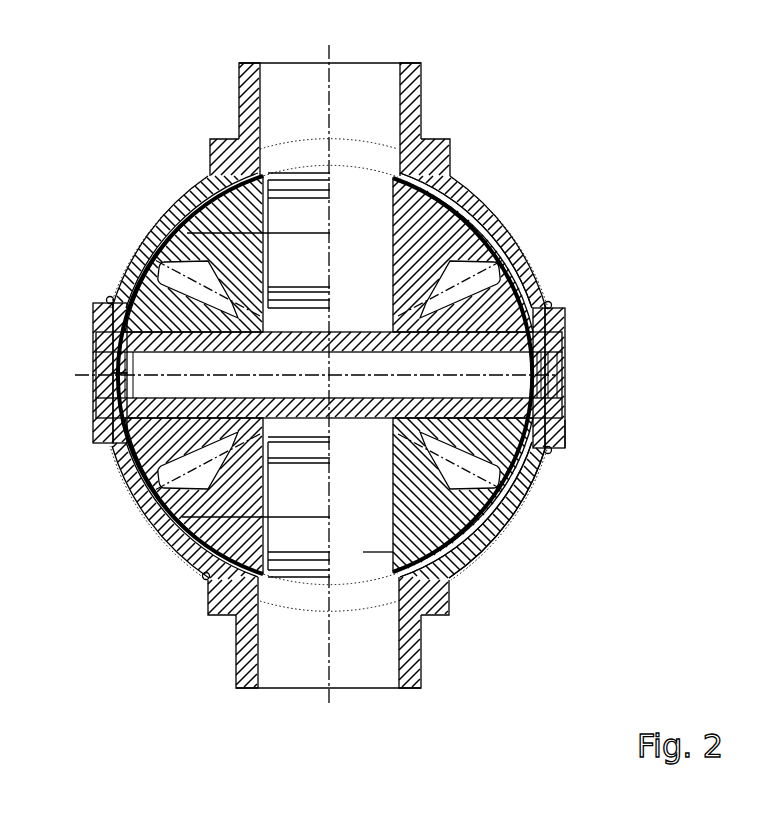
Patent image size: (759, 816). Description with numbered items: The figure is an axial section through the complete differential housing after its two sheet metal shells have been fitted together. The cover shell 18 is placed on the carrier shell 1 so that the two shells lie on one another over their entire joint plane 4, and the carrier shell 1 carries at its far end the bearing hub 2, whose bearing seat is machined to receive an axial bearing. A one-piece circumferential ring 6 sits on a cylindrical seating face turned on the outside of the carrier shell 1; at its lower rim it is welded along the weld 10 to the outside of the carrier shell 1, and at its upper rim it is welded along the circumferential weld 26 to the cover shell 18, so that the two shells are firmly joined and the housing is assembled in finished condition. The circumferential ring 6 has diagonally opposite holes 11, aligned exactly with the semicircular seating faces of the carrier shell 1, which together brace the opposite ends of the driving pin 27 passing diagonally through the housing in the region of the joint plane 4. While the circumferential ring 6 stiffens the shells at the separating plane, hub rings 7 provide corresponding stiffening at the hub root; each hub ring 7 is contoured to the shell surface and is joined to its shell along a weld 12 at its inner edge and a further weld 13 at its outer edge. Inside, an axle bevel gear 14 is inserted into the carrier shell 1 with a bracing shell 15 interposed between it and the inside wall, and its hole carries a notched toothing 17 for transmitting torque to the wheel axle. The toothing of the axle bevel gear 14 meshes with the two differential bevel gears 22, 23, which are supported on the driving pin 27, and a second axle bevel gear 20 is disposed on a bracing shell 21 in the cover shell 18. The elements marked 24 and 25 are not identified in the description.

The carrier shell 1 is at (444, 560).
The bearing hub 2 is at (248, 95).
The joint plane 4 is at (573, 378).
The circumferential ring 6 is at (557, 325).
The hub ring 7 is at (440, 150).
The weld 10 is at (552, 453).
The holes 11 is at (100, 323).
The weld 12 is at (204, 579).
The weld 13 is at (230, 611).
The axle bevel gear 14 is at (457, 500).
The bracing shell 15 is at (478, 557).
The notched toothing 17 is at (363, 552).
The cover shell 18 is at (481, 215).
The axle bevel gear 20 is at (190, 242).
The bracing shell 21 is at (205, 187).
The differential bevel gear 22 is at (502, 467).
The differential bevel gear 23 is at (148, 281).
The seat element 24 is at (535, 272).
The seal carrier 25 is at (118, 302).
The circumferential weld 26 is at (552, 305).
The driving pin 27 is at (128, 437).